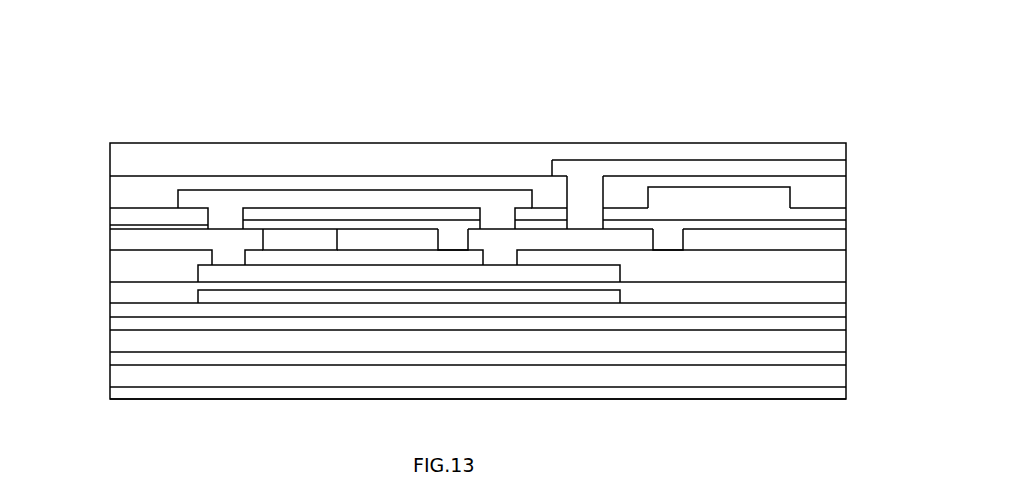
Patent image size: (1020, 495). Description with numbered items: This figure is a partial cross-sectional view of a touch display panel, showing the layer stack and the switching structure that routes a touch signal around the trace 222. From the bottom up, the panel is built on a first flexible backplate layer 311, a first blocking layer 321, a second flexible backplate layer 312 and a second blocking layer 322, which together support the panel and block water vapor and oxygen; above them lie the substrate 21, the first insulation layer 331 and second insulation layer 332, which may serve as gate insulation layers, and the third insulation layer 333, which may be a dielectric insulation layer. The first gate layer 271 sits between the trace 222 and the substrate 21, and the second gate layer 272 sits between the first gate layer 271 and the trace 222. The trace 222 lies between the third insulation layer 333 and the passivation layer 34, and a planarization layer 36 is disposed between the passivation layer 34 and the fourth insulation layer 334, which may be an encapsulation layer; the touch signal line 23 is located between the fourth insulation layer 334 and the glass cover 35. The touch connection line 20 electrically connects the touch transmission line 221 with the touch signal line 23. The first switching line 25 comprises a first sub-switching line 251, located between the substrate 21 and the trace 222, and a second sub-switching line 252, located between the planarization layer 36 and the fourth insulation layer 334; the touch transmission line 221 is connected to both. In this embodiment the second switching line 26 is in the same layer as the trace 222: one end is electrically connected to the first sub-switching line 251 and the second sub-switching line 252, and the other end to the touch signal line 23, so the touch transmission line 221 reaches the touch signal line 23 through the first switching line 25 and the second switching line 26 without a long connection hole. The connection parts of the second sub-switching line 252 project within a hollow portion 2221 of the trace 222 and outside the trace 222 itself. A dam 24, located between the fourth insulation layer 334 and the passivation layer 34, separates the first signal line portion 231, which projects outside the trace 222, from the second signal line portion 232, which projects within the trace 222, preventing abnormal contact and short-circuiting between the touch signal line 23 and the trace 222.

The touch connection line 20 is at (340, 187).
The substrate 21 is at (843, 394).
The touch signal line 23 is at (702, 153).
The dam 24 is at (665, 203).
The first switching line 25 is at (307, 187).
The second switching line 26 is at (583, 240).
The passivation layer 34 is at (273, 240).
The glass cover 35 is at (130, 161).
The planarization layer 36 is at (130, 215).
The touch transmission line 221 is at (157, 240).
The trace 222 is at (382, 240).
The hollow portion 2221 is at (453, 240).
The first signal line portion 231 is at (624, 168).
The second signal line portion 232 is at (738, 165).
The first sub-switching line 251 is at (303, 274).
The second sub-switching line 252 is at (437, 200).
The first gate layer 271 is at (358, 295).
The second gate layer 272 is at (405, 274).
The first flexible backplate layer 311 is at (130, 372).
The second flexible backplate layer 312 is at (130, 337).
The first blocking layer 321 is at (843, 360).
The second blocking layer 322 is at (843, 324).
The first insulation layer 331 is at (130, 309).
The second insulation layer 332 is at (843, 295).
The third insulation layer 333 is at (843, 268).
The fourth insulation layer 334 is at (130, 190).